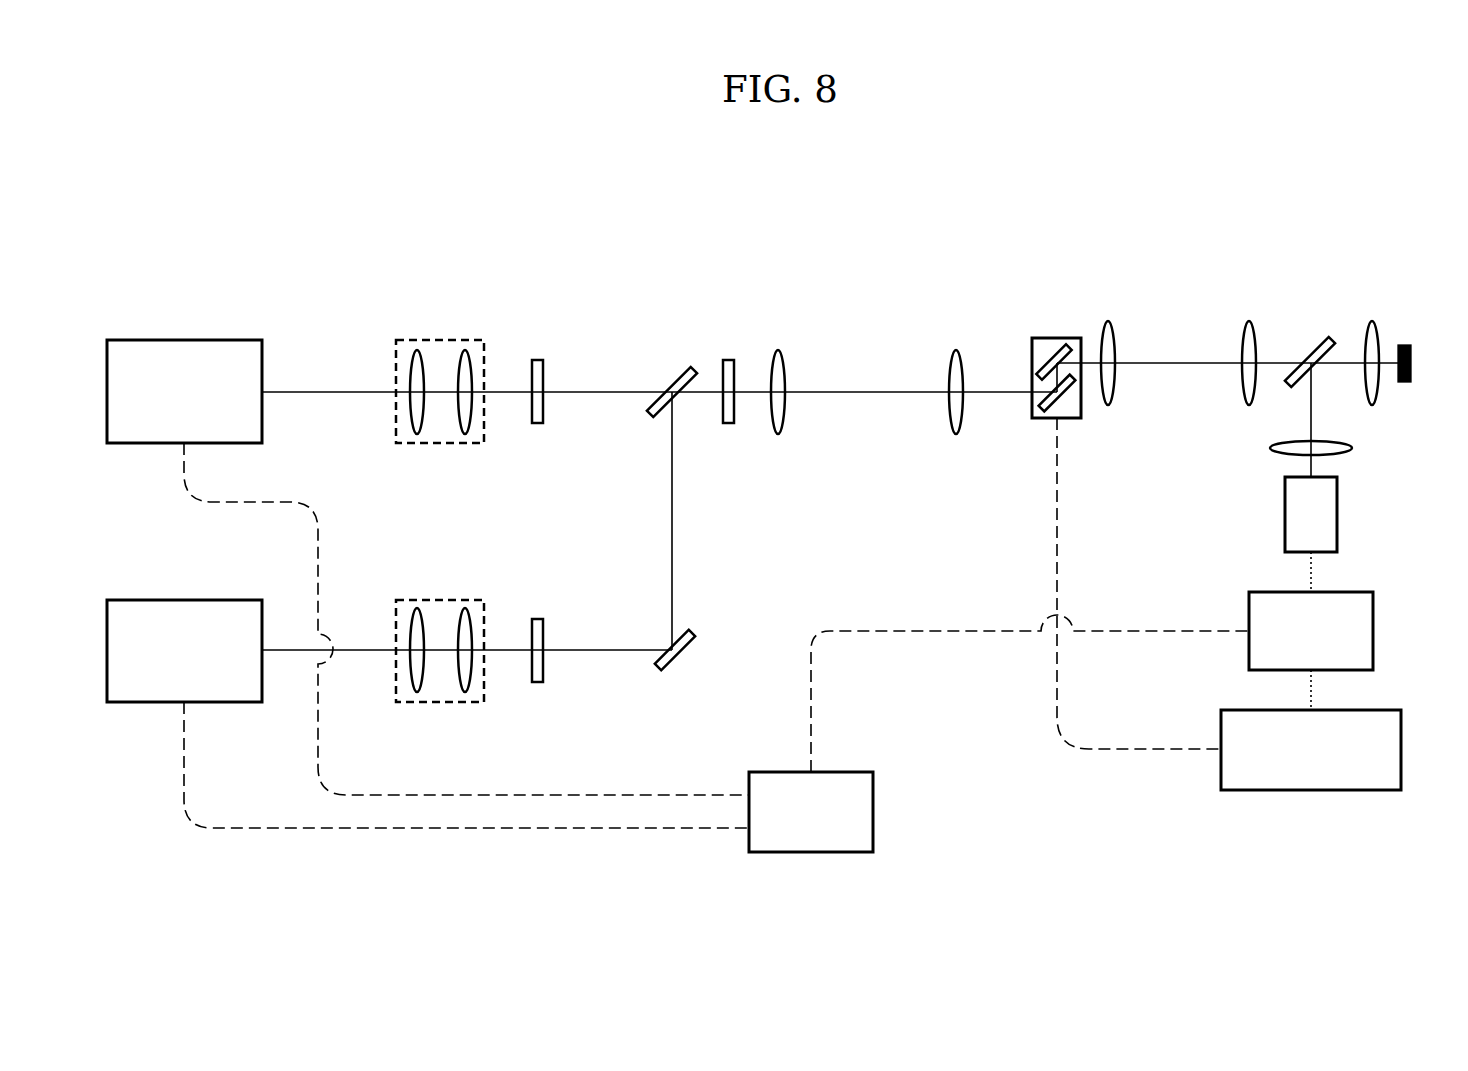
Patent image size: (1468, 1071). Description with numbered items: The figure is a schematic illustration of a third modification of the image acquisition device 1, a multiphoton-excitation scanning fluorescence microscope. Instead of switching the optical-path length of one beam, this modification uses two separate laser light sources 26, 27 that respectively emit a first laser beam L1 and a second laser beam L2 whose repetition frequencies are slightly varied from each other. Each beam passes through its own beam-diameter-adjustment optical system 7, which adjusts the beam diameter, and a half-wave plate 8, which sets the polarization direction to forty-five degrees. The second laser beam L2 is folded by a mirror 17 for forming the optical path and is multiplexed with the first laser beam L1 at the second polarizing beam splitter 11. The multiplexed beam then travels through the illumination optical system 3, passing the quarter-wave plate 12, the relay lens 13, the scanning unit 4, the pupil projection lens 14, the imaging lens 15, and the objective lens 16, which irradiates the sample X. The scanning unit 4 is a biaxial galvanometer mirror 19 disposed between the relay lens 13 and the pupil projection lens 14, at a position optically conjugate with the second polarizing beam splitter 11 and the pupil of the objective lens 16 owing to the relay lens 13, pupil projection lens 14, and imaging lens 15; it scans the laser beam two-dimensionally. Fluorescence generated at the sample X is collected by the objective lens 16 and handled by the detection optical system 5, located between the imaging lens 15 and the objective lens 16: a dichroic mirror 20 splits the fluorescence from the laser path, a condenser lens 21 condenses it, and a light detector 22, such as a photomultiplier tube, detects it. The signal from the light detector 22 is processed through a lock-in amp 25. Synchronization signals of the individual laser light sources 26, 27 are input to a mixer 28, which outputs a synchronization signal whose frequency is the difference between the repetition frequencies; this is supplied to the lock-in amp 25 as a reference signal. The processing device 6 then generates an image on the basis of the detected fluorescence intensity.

The image acquisition device 1 is at (1305, 152).
The illumination optical system 3 is at (870, 255).
The scanning unit 4 is at (1057, 338).
The detection optical system 5 is at (1382, 458).
The processing device 6 is at (1311, 790).
The beam-diameter-adjustment optical system 7 is at (440, 340).
The λ/2 plate 8 is at (538, 360).
The second polarizing beam splitter 11 is at (672, 375).
The λ/4 plate 12 is at (729, 360).
The relay lens 13 is at (778, 350).
The pupil projection lens 14 is at (1108, 321).
The imaging lens 15 is at (1249, 321).
The objective lens 16 is at (1372, 321).
The mirror 17 is at (690, 655).
The biaxial galvanometer mirror 19 is at (1043, 368).
The dichroic mirror 20 is at (1310, 342).
The condenser lens 21 is at (1270, 448).
The light detector 22 is at (1285, 516).
The lock-in amp 25 is at (1249, 614).
The laser light source 26 is at (184, 340).
The laser light source 27 is at (184, 600).
The mixer 28 is at (873, 812).
The sample X is at (1405, 345).
The first laser beam L1 is at (332, 392).
The second laser beam L2 is at (363, 650).